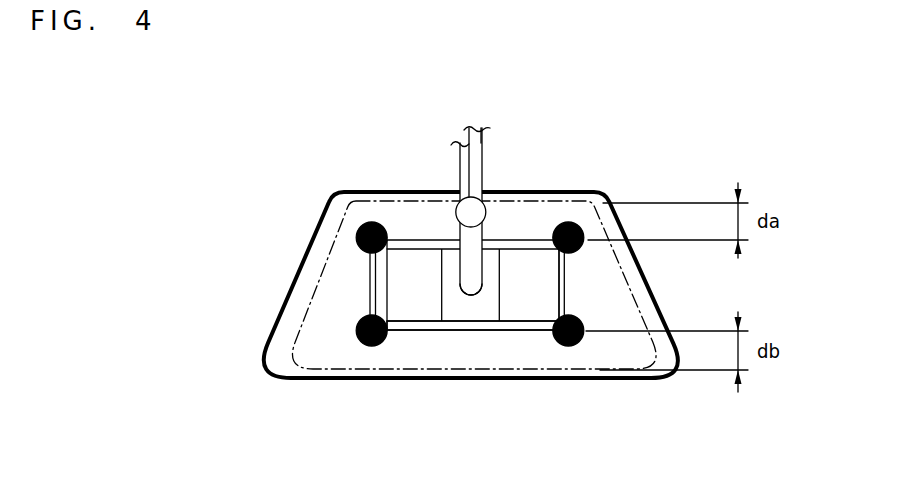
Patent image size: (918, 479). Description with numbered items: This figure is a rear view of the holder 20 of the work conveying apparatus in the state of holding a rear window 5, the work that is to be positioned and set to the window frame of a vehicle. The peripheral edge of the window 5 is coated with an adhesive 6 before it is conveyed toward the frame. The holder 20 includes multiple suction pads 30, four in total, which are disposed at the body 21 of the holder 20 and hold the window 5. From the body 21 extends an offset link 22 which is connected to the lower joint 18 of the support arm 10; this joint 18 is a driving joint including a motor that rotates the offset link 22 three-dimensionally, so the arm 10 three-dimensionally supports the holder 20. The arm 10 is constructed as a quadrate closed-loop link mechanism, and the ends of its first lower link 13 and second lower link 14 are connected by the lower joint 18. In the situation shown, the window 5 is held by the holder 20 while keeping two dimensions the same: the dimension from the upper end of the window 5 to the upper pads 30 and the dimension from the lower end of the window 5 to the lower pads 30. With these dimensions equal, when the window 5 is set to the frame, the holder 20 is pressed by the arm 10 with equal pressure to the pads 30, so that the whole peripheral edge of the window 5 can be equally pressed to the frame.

The rear window 5 is at (311, 241).
The adhesive 6 is at (305, 298).
The support arm 10 is at (424, 172).
The first lower link 13 is at (460, 180).
The second lower link 14 is at (481, 156).
The lower joint 18 is at (477, 212).
The holder 20 is at (418, 338).
The body 21 is at (530, 331).
The offset link 22 is at (467, 284).
The suction pads 30 is at (359, 246).